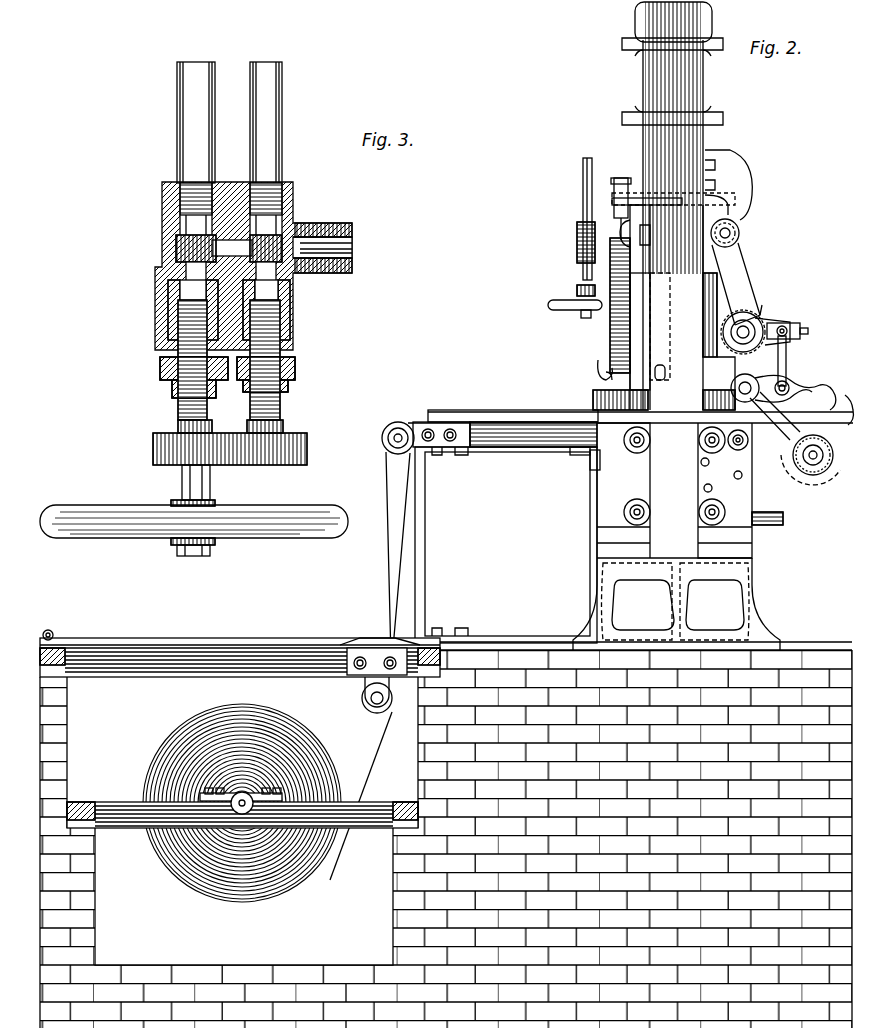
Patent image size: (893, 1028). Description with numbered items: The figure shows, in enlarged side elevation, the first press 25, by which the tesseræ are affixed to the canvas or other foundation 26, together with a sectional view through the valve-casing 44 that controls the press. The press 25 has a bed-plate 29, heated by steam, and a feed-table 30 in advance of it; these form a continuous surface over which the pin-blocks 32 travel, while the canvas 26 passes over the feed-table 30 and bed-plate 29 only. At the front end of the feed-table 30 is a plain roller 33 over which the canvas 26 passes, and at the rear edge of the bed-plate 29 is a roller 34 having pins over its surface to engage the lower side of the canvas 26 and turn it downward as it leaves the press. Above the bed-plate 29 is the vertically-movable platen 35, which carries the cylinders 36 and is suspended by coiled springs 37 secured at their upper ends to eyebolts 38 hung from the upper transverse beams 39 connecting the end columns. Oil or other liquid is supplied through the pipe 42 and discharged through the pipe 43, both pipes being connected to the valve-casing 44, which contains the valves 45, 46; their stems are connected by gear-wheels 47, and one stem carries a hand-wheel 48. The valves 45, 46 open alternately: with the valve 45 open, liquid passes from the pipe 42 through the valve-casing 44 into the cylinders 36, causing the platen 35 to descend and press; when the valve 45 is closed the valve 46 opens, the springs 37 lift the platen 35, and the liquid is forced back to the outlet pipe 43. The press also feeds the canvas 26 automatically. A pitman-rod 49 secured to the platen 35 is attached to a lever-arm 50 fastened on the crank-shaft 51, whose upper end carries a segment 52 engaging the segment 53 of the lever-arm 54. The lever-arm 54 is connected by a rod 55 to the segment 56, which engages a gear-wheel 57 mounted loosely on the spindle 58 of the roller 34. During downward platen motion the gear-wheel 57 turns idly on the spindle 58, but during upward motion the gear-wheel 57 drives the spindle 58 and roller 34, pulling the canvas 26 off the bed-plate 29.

In FIG. 2, the first press 25 is at (652, 206).
In FIG. 2, the canvas or other foundation 26 is at (838, 485).
In FIG. 2, the bed-plate 29 is at (582, 455).
In FIG. 2, the feed-table 30 is at (503, 447).
In FIG. 2, the pin-blocks 32 is at (480, 410).
In FIG. 2, the plain roller 33 is at (400, 455).
In FIG. 2, the roller 34 is at (818, 505).
In FIG. 2, the platen 35 is at (593, 400).
In FIG. 2, the cylinders 36 is at (610, 328).
In FIG. 2, the coiled springs 37 is at (612, 345).
In FIG. 2, the eyebolts 38 is at (614, 190).
In FIG. 2, the upper transverse beams 39 is at (713, 133).
In FIG. 3, the pipe 42 is at (282, 115).
In FIG. 2, the pipe 42 is at (583, 199).
In FIG. 3, the pipe 43 is at (177, 110).
In FIG. 3, the valve-casing 44 is at (168, 300).
In FIG. 3, the valve 45 is at (296, 220).
In FIG. 3, the valve 46 is at (176, 247).
In FIG. 3, the gear-wheels 47 is at (153, 451).
In FIG. 3, the hand-wheel 48 is at (194, 517).
In FIG. 2, the hand-wheel 48 is at (569, 300).
In FIG. 2, the pitman-rod 49 is at (660, 335).
In FIG. 2, the lever-arm 50 is at (740, 252).
In FIG. 2, the crank-shaft 51 is at (739, 232).
In FIG. 2, the segment 52 is at (750, 295).
In FIG. 2, the segment 53 is at (763, 322).
In FIG. 2, the lever-arm 54 is at (800, 322).
In FIG. 2, the rod 55 is at (786, 353).
In FIG. 2, the segment 56 is at (800, 395).
In FIG. 2, the gear-wheel 57 is at (800, 470).
In FIG. 2, the spindle 58 is at (845, 415).